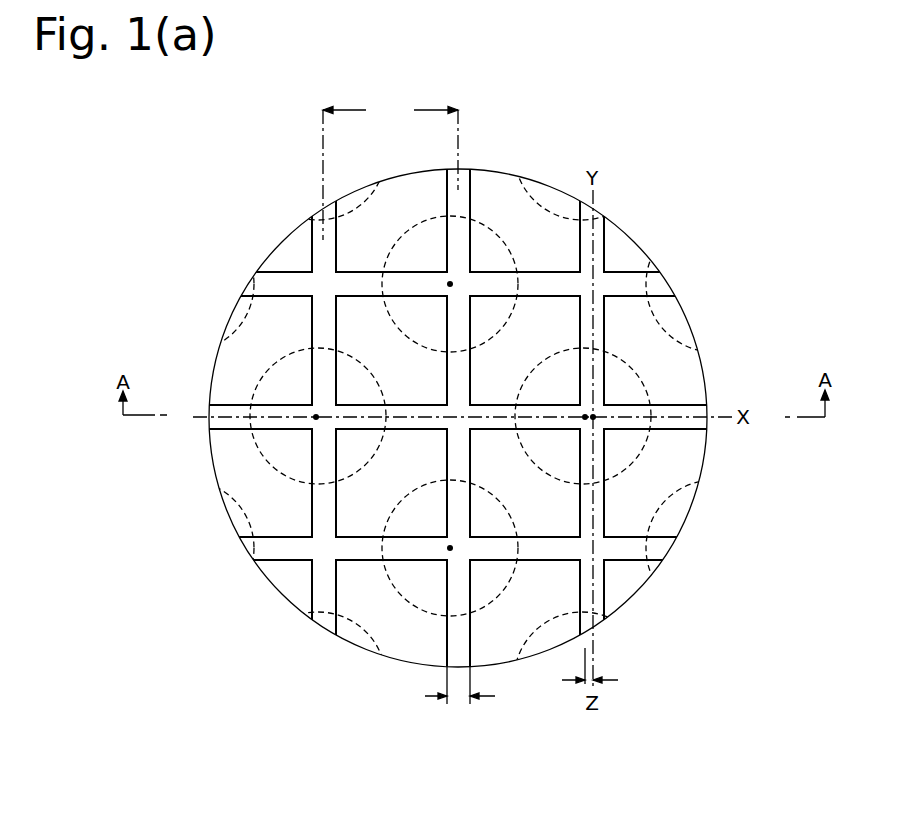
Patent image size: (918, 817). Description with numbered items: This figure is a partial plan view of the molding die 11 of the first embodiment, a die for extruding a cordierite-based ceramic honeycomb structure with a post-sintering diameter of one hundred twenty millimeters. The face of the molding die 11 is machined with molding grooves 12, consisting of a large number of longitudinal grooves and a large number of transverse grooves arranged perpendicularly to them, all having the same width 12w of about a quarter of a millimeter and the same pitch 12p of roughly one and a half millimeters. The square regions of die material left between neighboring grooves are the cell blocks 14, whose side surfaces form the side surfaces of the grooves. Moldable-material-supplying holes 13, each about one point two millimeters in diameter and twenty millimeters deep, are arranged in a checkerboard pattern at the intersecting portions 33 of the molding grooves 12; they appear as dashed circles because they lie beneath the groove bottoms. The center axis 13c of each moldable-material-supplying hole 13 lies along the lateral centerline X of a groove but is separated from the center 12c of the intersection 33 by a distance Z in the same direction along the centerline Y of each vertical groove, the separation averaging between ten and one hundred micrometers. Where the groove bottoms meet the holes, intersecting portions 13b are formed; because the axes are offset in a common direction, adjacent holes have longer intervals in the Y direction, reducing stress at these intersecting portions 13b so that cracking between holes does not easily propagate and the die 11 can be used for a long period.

The molding die 11 is at (226, 248).
The molding grooves 12 is at (597, 305).
The pitch 12p is at (390, 169).
The width 12w is at (460, 697).
The center of intersection 12c is at (594, 415).
The moldable-material-supplying holes 13 is at (648, 444).
The intersecting portions 13b is at (524, 410).
The center axis 13c is at (585, 417).
The cell block 14 is at (535, 323).
The intersecting portions 33 is at (456, 282).